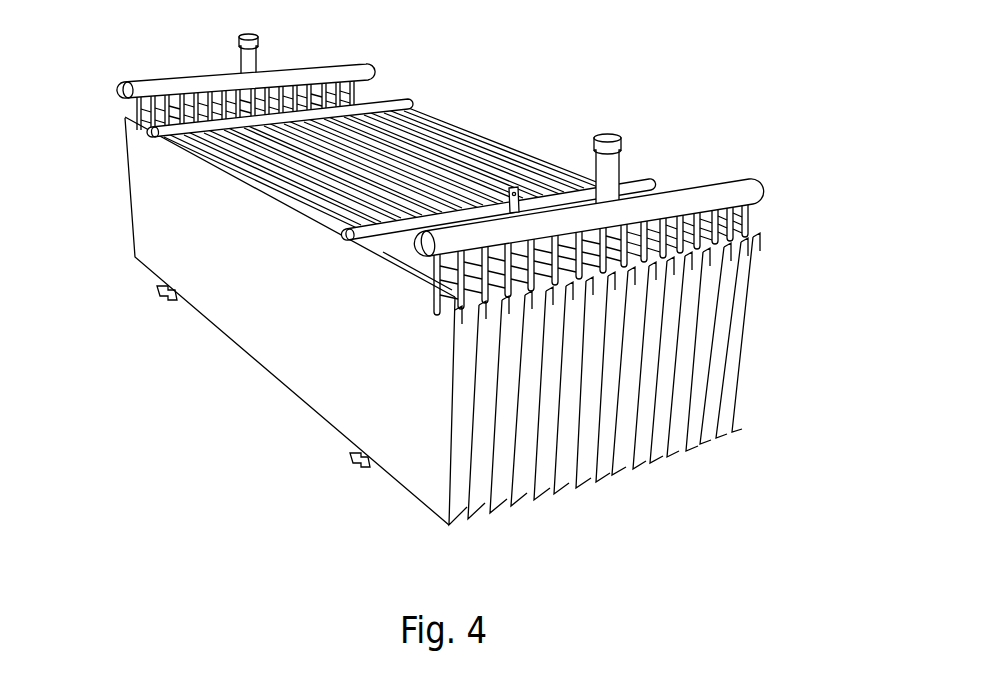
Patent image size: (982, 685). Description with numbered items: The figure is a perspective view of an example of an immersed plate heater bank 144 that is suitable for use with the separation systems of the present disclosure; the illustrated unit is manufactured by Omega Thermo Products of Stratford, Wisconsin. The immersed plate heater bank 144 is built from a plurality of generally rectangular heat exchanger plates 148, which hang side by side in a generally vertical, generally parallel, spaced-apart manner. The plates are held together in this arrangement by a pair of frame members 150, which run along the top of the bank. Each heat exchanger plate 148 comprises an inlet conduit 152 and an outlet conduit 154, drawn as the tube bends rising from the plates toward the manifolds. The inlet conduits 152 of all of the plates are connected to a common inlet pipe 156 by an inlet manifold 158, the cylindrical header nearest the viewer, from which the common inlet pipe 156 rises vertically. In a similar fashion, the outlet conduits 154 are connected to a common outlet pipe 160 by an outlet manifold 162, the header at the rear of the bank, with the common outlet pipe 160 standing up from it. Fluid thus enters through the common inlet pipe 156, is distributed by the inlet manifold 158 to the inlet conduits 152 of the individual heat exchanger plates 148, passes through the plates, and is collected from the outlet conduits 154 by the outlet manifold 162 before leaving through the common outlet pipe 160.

The immersed plate heater bank 144 is at (590, 58).
The heat exchanger plate 148 is at (251, 324).
The frame member 150 is at (405, 100).
The inlet conduit 152 is at (433, 283).
The outlet conduit 154 is at (130, 111).
The common inlet pipe 156 is at (614, 138).
The inlet manifold 158 is at (738, 179).
The common outlet pipe 160 is at (257, 52).
The outlet manifold 162 is at (357, 66).